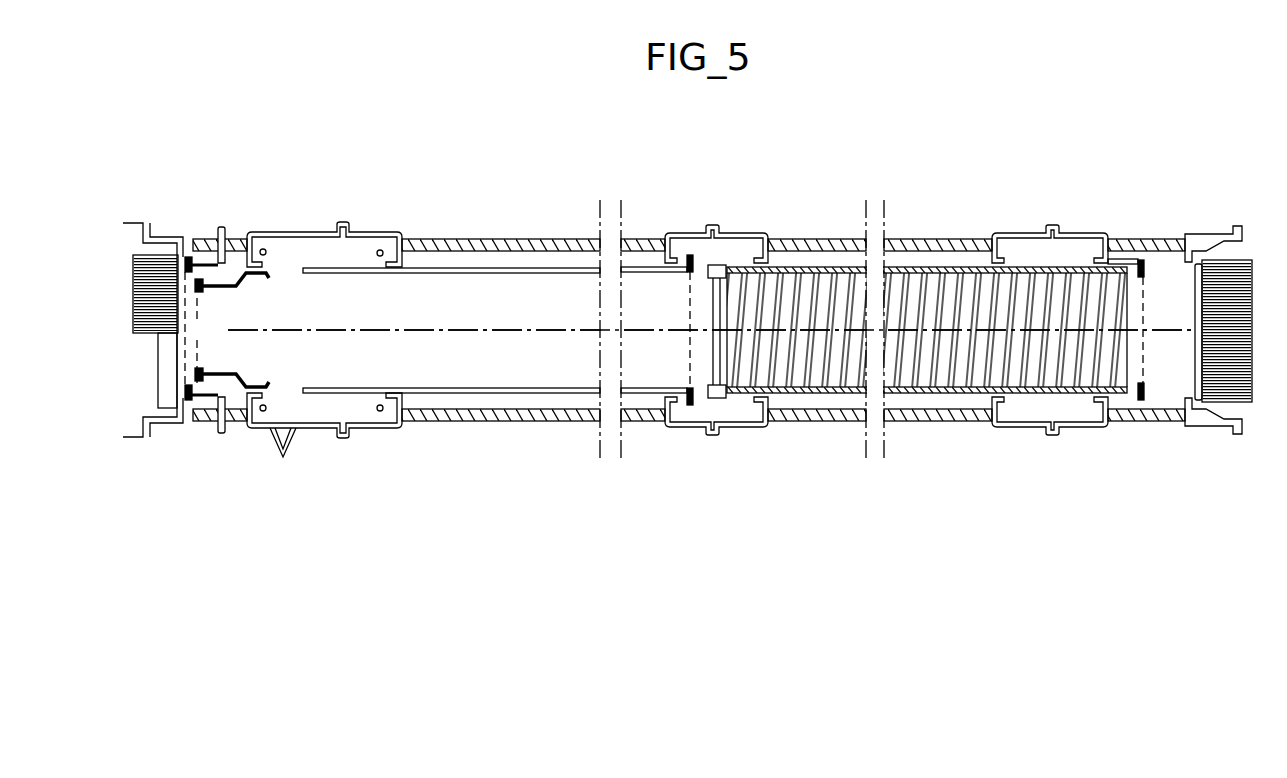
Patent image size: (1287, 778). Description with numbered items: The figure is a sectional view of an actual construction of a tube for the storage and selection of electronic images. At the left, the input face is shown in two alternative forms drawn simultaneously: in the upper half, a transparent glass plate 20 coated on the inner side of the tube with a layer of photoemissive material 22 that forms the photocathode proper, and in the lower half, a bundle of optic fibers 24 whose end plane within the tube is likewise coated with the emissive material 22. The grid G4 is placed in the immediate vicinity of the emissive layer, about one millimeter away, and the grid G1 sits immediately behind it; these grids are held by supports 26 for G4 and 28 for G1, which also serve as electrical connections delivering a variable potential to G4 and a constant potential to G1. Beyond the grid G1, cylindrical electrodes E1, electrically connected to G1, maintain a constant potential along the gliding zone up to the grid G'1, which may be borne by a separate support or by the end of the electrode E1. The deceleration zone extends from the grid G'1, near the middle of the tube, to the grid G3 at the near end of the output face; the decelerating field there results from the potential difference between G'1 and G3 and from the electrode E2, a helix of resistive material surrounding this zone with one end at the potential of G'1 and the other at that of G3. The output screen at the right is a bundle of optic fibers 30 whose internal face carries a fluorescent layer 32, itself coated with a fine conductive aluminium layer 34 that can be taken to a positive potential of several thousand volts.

The transparent glass plate 20 is at (165, 384).
The layer of photoemissive material 22 is at (178, 342).
The bundle of optic fibers 24 is at (137, 282).
The support for grid G4 26 is at (224, 229).
The support for grid G1 28 is at (268, 276).
The bundle of optic fibers 30 is at (1243, 283).
The fluorescent layer 32 is at (1200, 343).
The fine conductive layer 34 is at (1198, 346).
The cylindrical electrode E1 is at (454, 268).
The electrode E2 is at (975, 268).
The grid G1 is at (199, 299).
The grid G4 is at (200, 352).
The grid G'1 is at (668, 330).
The grid G3 is at (1145, 304).